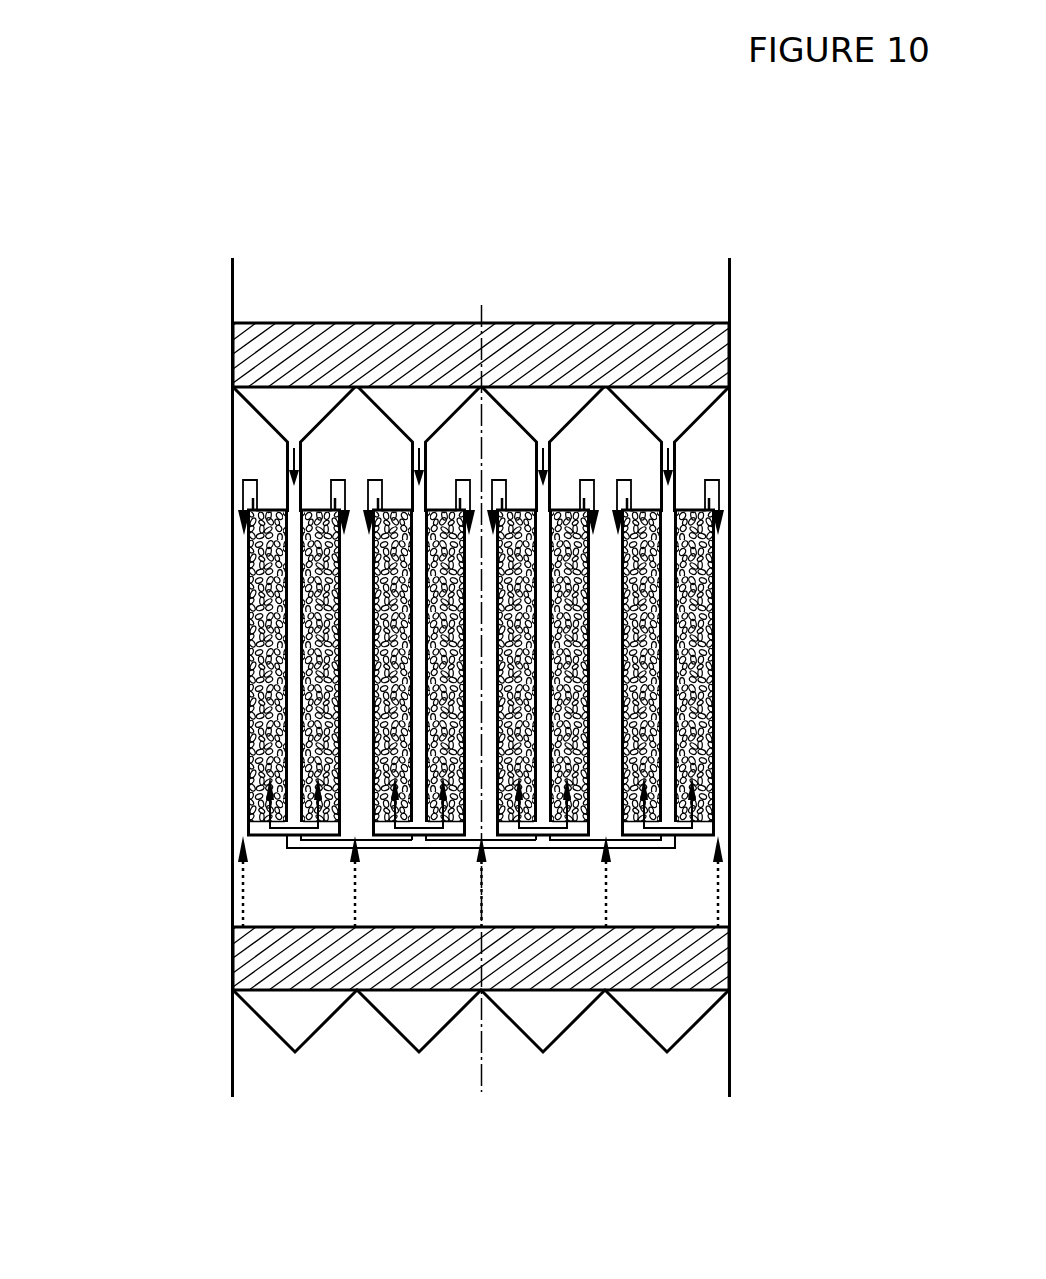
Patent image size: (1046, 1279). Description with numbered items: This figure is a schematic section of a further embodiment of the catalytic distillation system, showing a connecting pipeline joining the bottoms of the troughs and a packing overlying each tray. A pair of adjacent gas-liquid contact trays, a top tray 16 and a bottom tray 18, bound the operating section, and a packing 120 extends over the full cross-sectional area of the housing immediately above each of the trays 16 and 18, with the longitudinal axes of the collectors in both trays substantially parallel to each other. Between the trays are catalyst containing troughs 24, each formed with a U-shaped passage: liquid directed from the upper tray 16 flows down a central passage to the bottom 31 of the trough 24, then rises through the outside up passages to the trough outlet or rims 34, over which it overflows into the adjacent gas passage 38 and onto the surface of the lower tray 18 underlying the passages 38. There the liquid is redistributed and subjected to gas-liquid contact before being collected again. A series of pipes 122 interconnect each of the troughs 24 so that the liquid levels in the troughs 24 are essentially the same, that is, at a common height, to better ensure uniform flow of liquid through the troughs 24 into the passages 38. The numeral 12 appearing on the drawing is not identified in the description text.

The reactor vessel wall 12 is at (731, 783).
The top tray 16 is at (263, 418).
The bottom tray 18 is at (700, 1019).
The catalyst containing trough 24 is at (233, 598).
The bottom of the trough 31 is at (442, 840).
The trough outlet or rim 34 is at (318, 838).
The gas passage 38 is at (480, 592).
The packing 120 is at (700, 362).
The pipe 122 is at (422, 847).